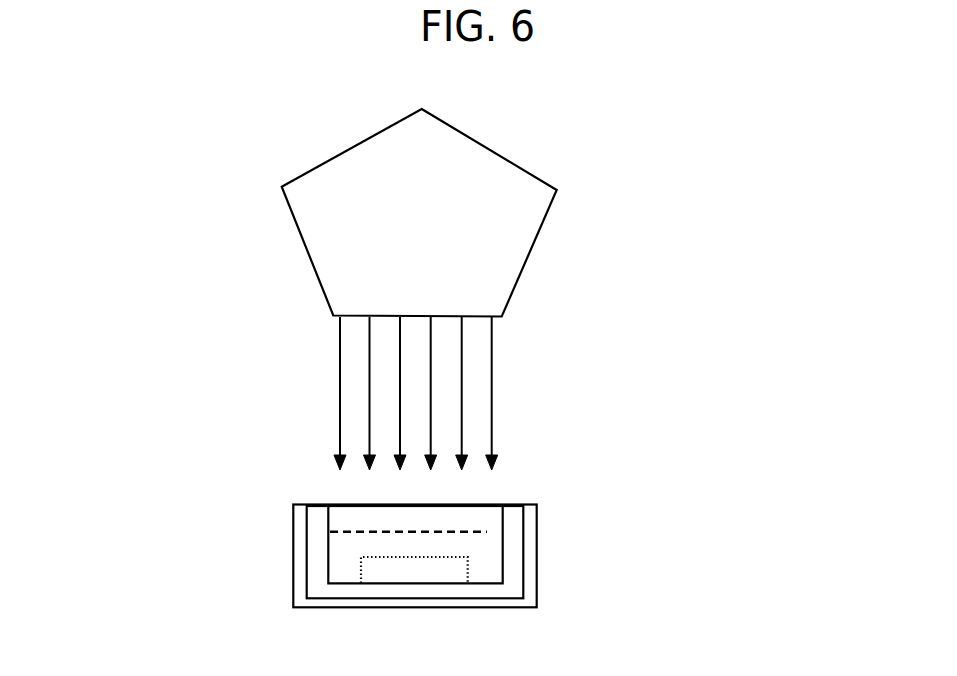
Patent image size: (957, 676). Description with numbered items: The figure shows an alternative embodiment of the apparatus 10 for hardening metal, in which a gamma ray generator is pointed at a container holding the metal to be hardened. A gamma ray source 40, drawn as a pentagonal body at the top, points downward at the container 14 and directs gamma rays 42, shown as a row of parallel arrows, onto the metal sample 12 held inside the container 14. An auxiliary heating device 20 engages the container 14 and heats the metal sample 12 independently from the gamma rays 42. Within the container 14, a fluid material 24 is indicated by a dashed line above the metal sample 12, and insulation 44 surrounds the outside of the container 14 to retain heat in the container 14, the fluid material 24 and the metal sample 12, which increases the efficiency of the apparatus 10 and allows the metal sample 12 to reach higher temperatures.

The apparatus 10 is at (672, 176).
The metal sample 12 is at (361, 568).
The container 14 is at (325, 543).
The auxiliary heating device 20 is at (566, 498).
The fluid material 24 is at (487, 532).
The gamma ray source 40 is at (323, 161).
The gamma rays 42 is at (337, 391).
The insulation 44 is at (538, 608).